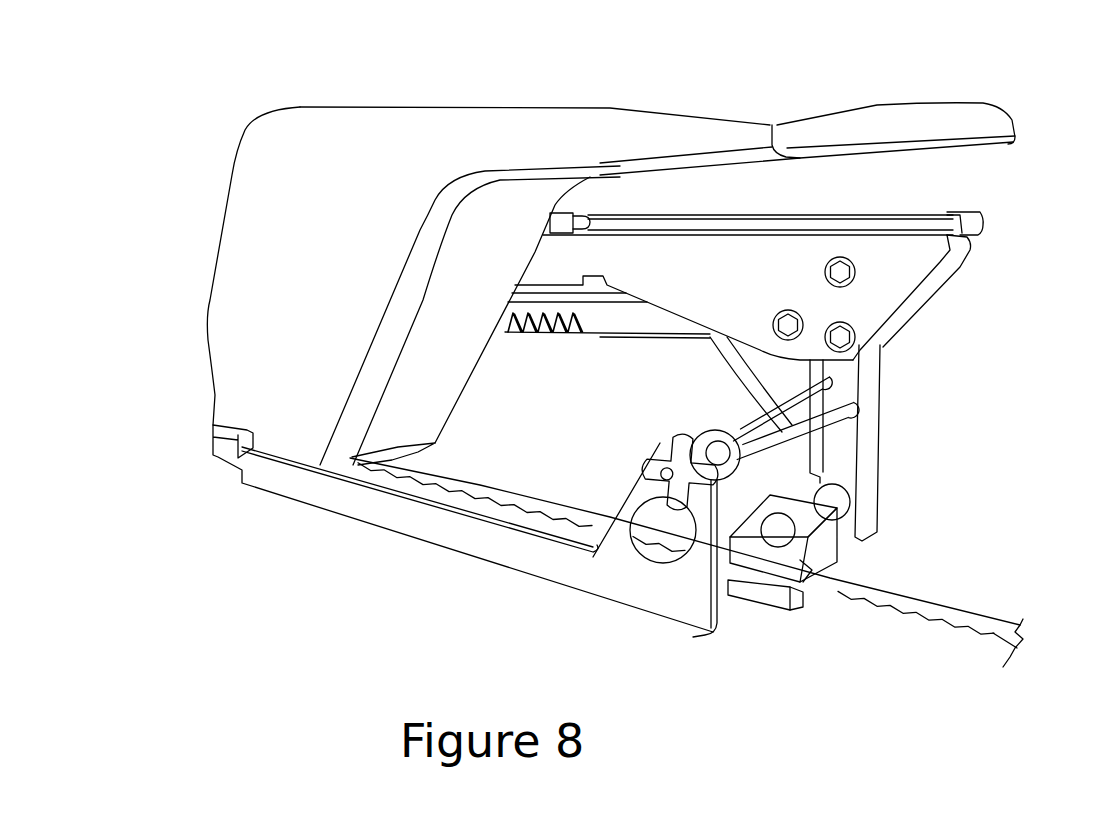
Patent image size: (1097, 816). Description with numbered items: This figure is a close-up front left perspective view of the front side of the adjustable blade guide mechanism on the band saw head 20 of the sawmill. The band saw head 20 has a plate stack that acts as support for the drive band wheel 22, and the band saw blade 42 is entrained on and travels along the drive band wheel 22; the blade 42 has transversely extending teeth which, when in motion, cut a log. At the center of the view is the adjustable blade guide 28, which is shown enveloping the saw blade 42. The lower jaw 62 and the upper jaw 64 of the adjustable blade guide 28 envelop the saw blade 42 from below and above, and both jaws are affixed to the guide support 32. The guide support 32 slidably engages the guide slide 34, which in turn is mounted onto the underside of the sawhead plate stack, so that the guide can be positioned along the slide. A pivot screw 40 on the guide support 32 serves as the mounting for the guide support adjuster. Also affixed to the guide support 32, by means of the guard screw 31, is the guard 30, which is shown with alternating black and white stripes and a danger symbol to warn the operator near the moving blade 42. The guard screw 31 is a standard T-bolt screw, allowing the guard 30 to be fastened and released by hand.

The band saw head 20 is at (427, 97).
The drive band wheel 22 is at (518, 133).
The adjustable blade guide 28 is at (823, 553).
The guard 30 is at (623, 563).
The guard screw 31 is at (660, 458).
The guide support 32 is at (893, 263).
The guide slide 34 is at (980, 223).
The pivot screw 40 is at (777, 318).
The band saw blade 42 is at (993, 632).
The lower jaw 62 is at (777, 600).
The upper jaw 64 is at (805, 570).